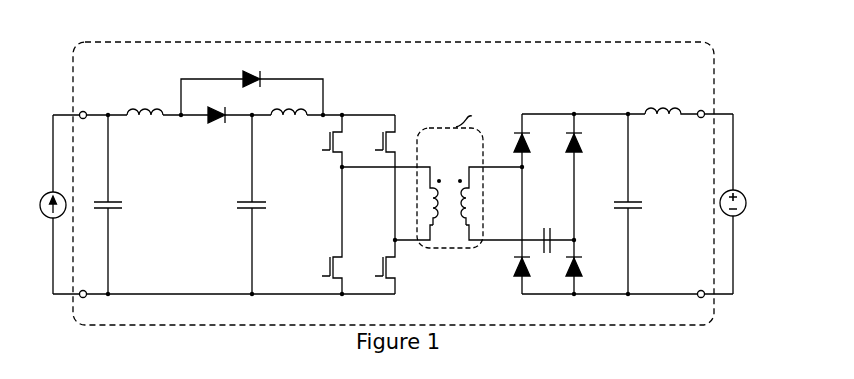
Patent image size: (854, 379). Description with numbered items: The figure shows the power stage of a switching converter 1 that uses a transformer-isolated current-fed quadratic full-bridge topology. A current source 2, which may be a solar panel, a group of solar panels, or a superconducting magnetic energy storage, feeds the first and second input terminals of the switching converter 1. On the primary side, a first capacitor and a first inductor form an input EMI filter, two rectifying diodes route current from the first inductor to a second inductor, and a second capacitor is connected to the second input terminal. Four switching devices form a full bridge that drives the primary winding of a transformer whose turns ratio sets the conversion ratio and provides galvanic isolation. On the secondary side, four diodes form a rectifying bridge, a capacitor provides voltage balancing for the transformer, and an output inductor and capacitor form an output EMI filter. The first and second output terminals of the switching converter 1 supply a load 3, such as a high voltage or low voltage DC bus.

The switching converter 1 is at (398, 42).
The current source 2 is at (45, 195).
The load 3 is at (746, 200).